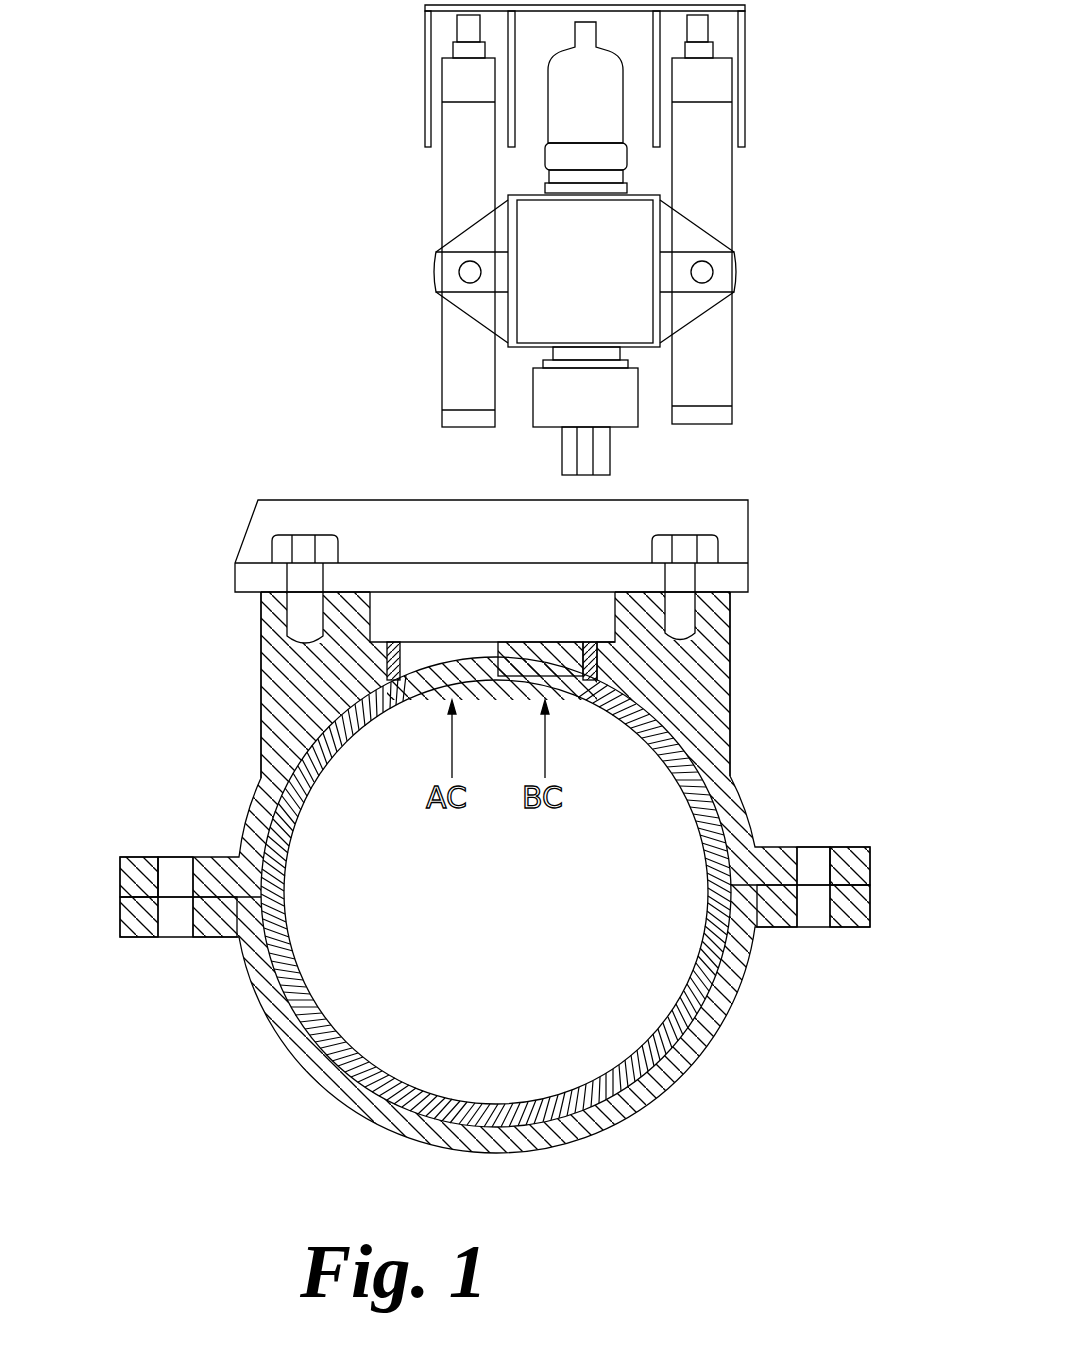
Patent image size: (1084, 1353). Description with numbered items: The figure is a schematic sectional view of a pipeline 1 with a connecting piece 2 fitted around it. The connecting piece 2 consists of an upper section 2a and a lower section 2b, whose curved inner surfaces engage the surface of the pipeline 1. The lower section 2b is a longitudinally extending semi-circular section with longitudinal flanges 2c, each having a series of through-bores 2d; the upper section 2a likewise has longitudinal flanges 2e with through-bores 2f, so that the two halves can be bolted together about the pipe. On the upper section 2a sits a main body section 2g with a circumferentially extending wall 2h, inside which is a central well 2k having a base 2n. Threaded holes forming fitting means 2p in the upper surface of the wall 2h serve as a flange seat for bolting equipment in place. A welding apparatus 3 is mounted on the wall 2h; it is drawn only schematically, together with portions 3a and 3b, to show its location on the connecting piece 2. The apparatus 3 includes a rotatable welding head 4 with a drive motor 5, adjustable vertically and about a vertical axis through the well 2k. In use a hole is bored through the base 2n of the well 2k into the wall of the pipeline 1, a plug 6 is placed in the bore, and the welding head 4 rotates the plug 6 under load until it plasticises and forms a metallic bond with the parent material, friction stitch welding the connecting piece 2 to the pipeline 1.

The pipeline 1 is at (710, 776).
The connecting piece 2 is at (752, 677).
The upper section 2a is at (880, 854).
The lower section 2b is at (563, 1172).
The longitudinal flanges 2c is at (140, 940).
The through-bores 2d is at (180, 925).
The longitudinal flanges 2e is at (140, 870).
The through-bores 2f is at (178, 870).
The main body section 2g is at (692, 660).
The circumferentially extending wall 2h is at (735, 601).
The central well 2k is at (403, 623).
The base 2n is at (640, 740).
The fitting means 2p is at (287, 613).
The welding apparatus 3 is at (772, 489).
The actuator 3a is at (398, 300).
The mounting plate 3b is at (250, 528).
The rotatable welding head 4 is at (557, 413).
The drive motor 5 is at (545, 235).
The plug 6 is at (590, 642).